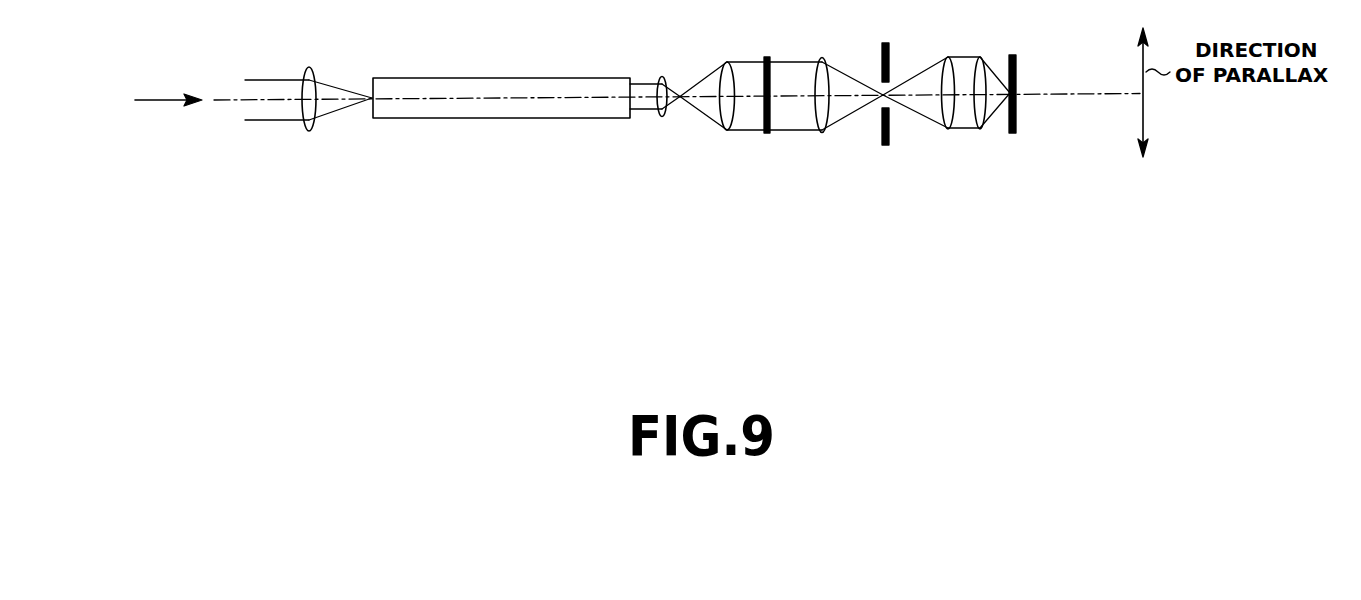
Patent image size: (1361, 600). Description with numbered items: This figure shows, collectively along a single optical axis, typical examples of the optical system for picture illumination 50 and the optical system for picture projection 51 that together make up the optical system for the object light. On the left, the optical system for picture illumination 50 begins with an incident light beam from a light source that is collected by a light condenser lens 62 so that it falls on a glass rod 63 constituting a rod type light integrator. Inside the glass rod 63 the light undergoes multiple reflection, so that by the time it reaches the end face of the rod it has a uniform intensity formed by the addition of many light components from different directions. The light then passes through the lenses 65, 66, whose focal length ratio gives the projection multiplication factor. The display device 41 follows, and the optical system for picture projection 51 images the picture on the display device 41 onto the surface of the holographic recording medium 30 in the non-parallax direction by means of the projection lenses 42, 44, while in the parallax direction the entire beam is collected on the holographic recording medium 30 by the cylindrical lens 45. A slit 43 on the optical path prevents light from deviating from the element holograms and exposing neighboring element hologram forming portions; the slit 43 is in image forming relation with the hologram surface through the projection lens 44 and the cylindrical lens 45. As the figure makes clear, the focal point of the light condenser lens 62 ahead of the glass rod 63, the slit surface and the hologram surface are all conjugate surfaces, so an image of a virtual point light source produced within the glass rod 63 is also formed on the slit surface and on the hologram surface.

The holographic recording medium 30 is at (1016, 58).
The display device 41 is at (767, 133).
The projection lens 42 is at (820, 132).
The slit 43 is at (886, 145).
The projection lens 44 is at (948, 128).
The cylindrical lens 45 is at (1007, 140).
The optical system for picture illumination 50 is at (524, 171).
The optical system for picture projection 51 is at (927, 160).
The light condenser lens 62 is at (309, 131).
The glass rod 63 is at (532, 110).
The lens 65 is at (658, 116).
The lens 66 is at (719, 145).